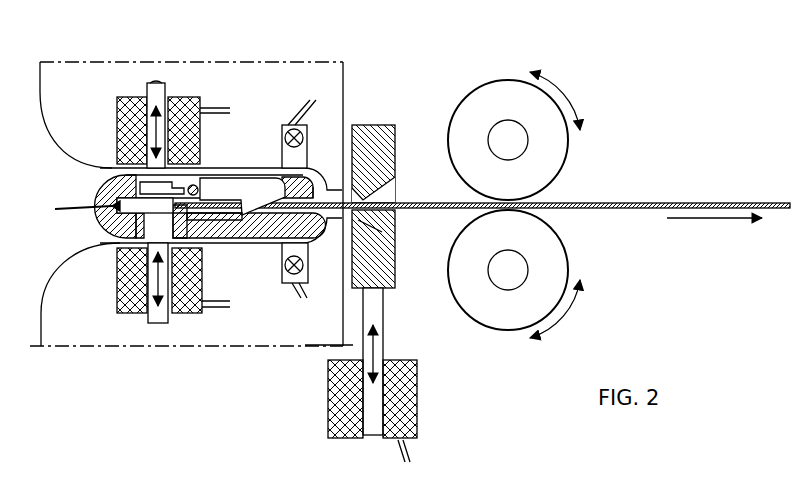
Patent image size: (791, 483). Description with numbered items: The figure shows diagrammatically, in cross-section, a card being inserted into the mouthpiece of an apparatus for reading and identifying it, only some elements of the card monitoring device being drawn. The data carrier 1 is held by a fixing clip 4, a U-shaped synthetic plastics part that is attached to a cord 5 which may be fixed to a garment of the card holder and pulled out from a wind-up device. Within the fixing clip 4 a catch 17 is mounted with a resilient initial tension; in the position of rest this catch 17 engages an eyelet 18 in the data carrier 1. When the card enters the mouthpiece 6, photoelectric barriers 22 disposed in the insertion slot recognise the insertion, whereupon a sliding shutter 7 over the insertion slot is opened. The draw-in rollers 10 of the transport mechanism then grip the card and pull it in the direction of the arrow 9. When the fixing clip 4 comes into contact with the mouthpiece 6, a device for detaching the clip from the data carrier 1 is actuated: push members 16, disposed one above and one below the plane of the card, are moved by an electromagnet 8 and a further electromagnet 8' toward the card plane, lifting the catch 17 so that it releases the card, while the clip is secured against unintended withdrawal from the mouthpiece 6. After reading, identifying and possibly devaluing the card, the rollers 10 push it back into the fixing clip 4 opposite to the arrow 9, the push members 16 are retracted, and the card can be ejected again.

The data carrier 1 is at (731, 197).
The fixing clip 4 is at (100, 226).
The cord 5 is at (75, 205).
The mouthpiece 6 is at (80, 140).
The sliding shutter 7 is at (365, 148).
The electromagnet 8 is at (173, 95).
The electromagnet 8' is at (173, 315).
The arrow 9 is at (710, 220).
The draw-in rollers 10 is at (545, 162).
The push members 16 is at (160, 92).
The catch 17 is at (247, 192).
The eyelet 18 is at (272, 209).
The photoelectric barriers 22 is at (308, 135).